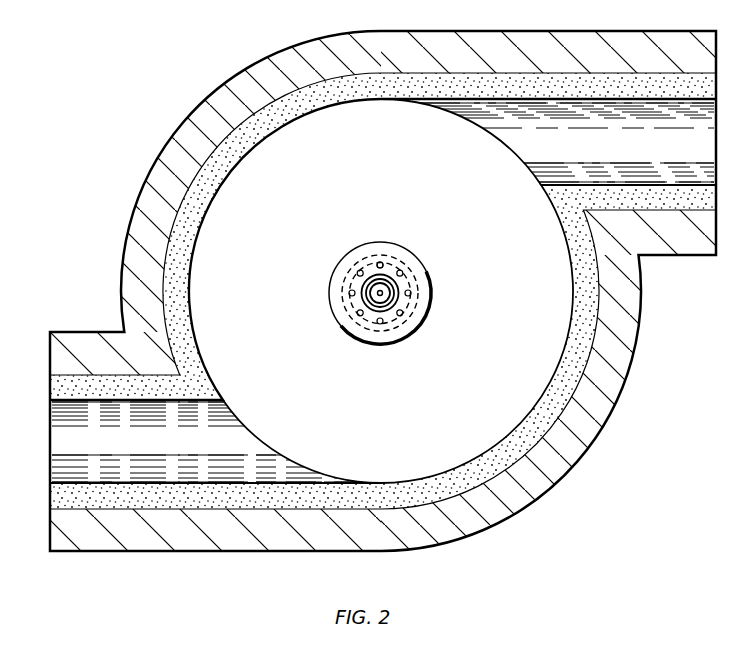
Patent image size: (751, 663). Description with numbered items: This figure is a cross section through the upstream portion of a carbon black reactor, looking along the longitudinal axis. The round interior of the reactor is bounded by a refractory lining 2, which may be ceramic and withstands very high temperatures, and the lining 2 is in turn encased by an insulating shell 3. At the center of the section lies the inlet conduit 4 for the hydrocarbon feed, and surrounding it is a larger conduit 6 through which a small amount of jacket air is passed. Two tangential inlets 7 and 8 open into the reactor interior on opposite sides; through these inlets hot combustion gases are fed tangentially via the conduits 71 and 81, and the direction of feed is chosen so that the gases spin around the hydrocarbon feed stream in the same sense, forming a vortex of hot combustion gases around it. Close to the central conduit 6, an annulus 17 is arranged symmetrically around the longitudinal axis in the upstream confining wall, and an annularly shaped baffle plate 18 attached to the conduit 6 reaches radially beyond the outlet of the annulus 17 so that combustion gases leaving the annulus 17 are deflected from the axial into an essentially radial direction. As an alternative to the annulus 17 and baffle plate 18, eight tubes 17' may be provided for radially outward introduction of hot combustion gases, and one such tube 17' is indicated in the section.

The refractory lining 2 is at (572, 355).
The insulating shell 3 is at (383, 291).
The inlet conduit 4 is at (369, 292).
The larger conduit 6 is at (397, 286).
The tangential inlet 7 is at (262, 442).
The tangential inlet 8 is at (487, 130).
The annulus 17 is at (385, 312).
The tubes 17' is at (362, 246).
The baffle plate 18 is at (392, 249).
The conduit 71 is at (172, 447).
The conduit 81 is at (619, 152).